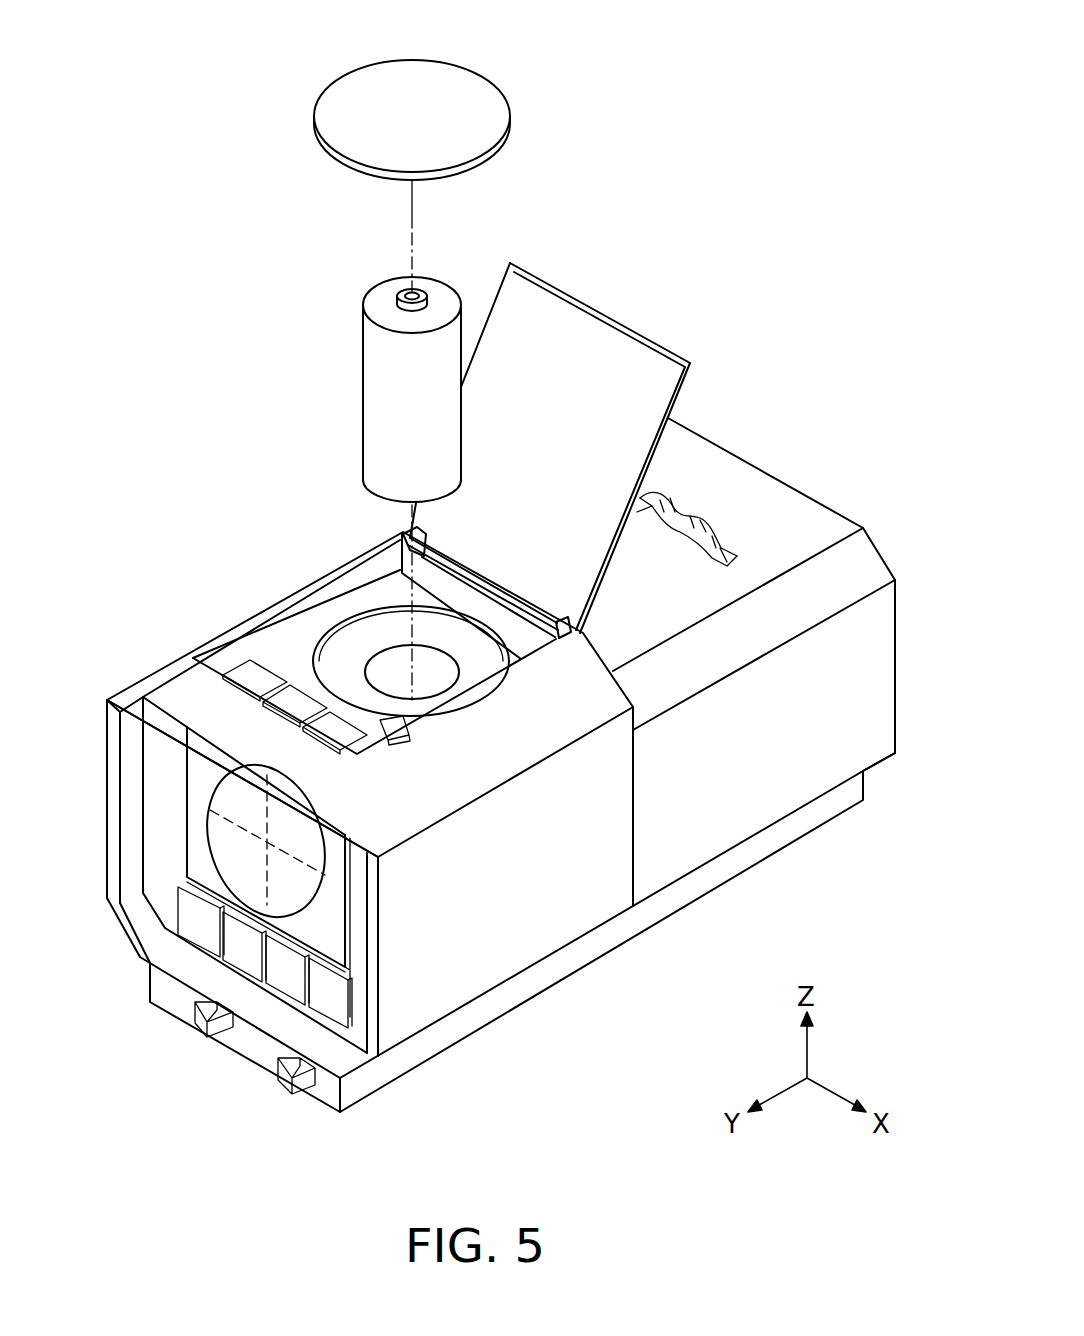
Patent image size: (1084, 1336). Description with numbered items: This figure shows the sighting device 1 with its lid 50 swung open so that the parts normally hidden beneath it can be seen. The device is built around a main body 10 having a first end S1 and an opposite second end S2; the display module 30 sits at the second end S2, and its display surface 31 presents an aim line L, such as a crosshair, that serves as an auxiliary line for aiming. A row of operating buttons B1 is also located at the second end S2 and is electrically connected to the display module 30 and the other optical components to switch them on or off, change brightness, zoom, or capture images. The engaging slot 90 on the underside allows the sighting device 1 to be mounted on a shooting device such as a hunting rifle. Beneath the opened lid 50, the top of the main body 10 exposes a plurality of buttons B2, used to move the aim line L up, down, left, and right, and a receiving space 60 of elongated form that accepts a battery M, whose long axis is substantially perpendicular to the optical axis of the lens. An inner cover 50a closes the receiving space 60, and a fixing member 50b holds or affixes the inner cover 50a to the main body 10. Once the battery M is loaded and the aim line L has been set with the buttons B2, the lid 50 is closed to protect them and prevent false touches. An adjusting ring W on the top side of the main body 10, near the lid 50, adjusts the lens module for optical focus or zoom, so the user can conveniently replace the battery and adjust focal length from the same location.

The sighting device 1 is at (64, 34).
The main body 10 is at (501, 768).
The display module 30 is at (210, 862).
The display surface 31 is at (202, 750).
The lid 50 is at (607, 312).
The inner cover 50a is at (338, 97).
The fixing member 50b is at (405, 726).
The receiving space 60 is at (395, 675).
The engaging slot 90 is at (240, 1030).
The operating buttons B1 is at (180, 907).
The buttons B2 is at (236, 668).
The aim line L is at (232, 779).
The battery M is at (372, 384).
The first end S1 is at (896, 665).
The second end S2 is at (112, 872).
The adjusting ring W is at (702, 515).